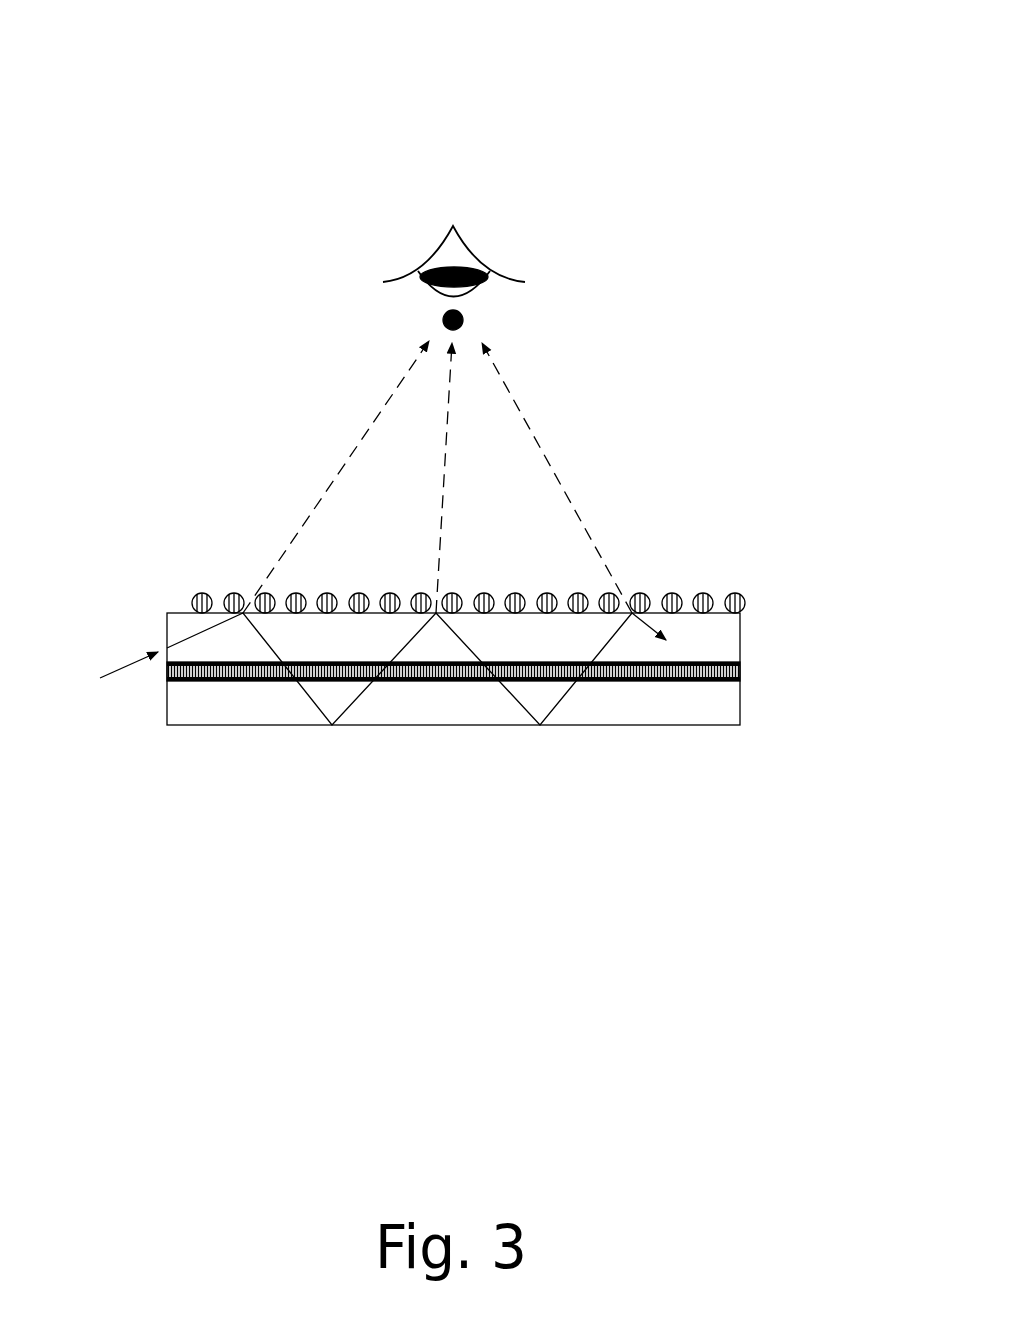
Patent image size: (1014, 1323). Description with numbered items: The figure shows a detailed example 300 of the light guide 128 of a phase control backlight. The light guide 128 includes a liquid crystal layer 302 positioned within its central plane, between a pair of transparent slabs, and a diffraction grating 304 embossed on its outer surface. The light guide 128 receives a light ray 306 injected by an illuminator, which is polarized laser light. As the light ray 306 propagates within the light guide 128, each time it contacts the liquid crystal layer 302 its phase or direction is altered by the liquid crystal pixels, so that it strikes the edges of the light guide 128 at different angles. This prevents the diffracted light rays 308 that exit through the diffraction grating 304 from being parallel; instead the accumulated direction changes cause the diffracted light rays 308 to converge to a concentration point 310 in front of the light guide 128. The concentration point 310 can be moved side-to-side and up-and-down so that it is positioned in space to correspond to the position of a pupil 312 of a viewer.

The detailed example of light guide 300 is at (118, 48).
The light guide 128 is at (740, 640).
The liquid crystal layer 302 is at (536, 662).
The diffraction grating 304 is at (544, 603).
The light ray 306 is at (130, 662).
The diffracted light rays 308 is at (563, 390).
The concentration point 310 is at (461, 327).
The pupil 312 is at (477, 255).